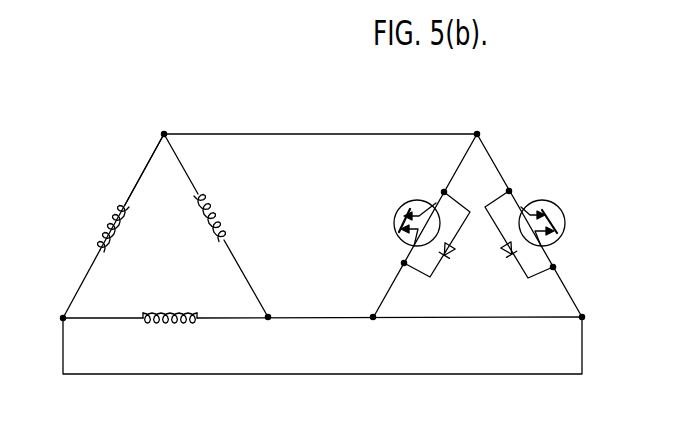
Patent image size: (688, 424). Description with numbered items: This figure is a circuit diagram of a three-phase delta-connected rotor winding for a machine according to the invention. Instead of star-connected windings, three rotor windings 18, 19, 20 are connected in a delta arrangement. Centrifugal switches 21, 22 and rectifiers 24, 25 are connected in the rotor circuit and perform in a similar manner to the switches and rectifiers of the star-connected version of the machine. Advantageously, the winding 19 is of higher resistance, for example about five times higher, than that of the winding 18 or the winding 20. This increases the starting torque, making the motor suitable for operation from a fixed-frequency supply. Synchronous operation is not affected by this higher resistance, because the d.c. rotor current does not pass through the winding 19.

The rotor winding 18 is at (101, 229).
The rotor winding 20 is at (196, 222).
The rotor winding 19 is at (143, 320).
The centrifugal switch 21 is at (407, 201).
The centrifugal switch 22 is at (621, 201).
The rectifier 24 is at (444, 258).
The rectifier 25 is at (510, 250).